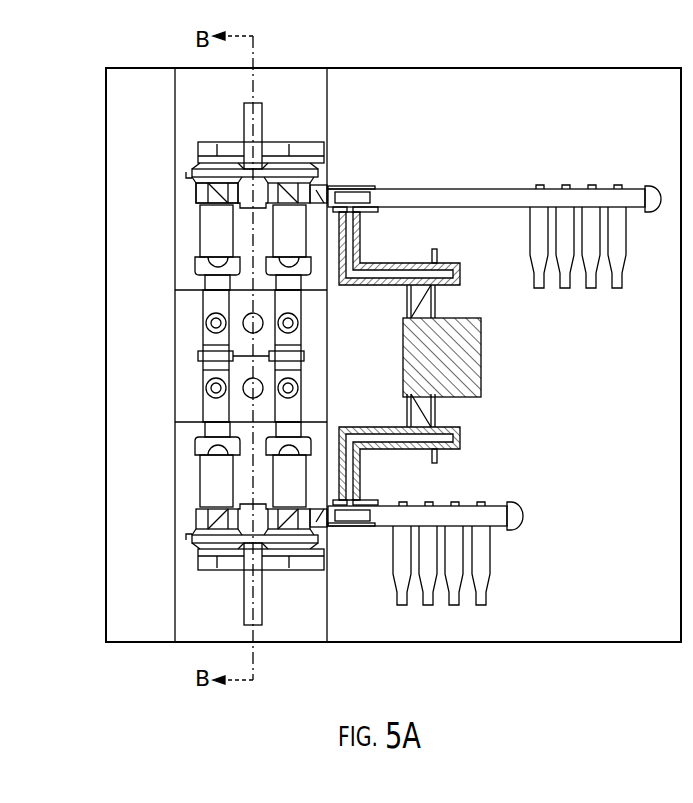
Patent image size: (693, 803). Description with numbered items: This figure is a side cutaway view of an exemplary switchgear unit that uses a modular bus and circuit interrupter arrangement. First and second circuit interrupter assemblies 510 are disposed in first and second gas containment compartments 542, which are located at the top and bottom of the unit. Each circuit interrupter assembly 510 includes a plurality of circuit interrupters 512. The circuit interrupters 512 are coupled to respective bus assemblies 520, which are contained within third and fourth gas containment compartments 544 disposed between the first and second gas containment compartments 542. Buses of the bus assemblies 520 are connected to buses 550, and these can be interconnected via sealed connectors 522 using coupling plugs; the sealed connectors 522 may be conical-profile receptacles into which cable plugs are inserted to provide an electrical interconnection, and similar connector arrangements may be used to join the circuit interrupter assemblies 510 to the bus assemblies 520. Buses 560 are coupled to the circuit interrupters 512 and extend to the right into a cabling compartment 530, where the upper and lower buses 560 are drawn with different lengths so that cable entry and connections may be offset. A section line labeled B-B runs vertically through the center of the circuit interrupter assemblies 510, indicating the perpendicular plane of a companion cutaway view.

The circuit interrupter assembly 510 is at (185, 133).
The circuit interrupter 512 is at (198, 222).
The bus assembly 520 is at (200, 335).
The sealed connector 522 is at (200, 353).
The cabling compartment 530 is at (502, 75).
The gas containment compartment 542 is at (189, 73).
The gas containment compartment 544 is at (178, 314).
The bus 550 is at (300, 380).
The bus 560 is at (485, 189).